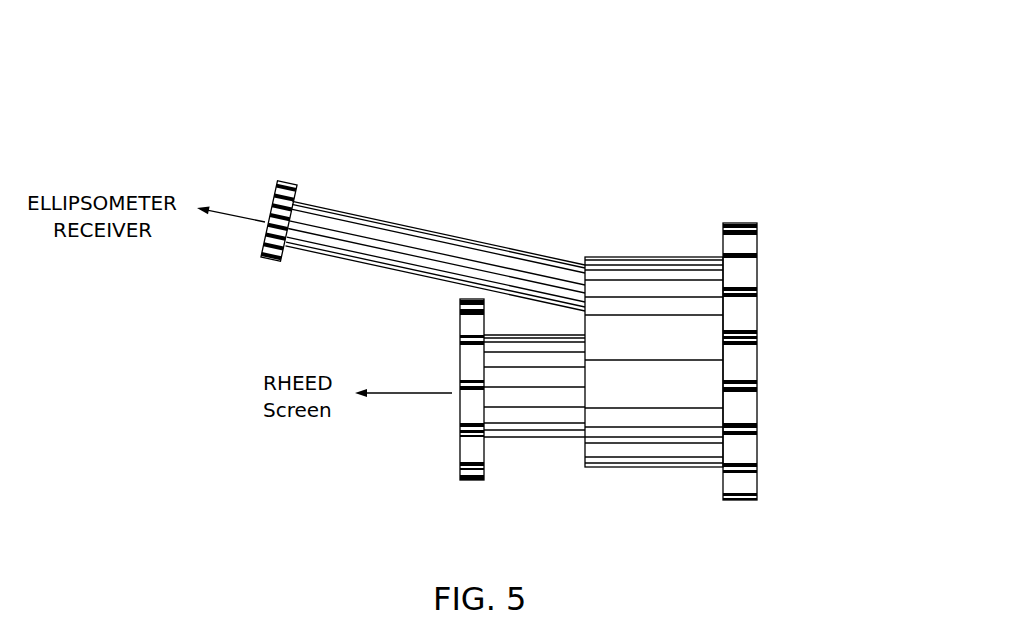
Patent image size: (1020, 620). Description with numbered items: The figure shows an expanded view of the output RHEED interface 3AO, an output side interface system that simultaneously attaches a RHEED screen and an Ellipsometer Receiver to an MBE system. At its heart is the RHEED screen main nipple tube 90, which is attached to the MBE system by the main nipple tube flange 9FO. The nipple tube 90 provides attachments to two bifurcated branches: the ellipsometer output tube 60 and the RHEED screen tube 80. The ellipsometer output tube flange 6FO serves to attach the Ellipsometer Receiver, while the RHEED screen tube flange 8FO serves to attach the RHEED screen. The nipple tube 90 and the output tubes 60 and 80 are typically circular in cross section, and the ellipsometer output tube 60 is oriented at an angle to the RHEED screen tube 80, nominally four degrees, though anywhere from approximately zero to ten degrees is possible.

The output RHEED interface 3AO is at (775, 107).
The ellipsometer output tube flange 6FO is at (285, 175).
The ellipsometer output tube 60 is at (435, 215).
The RHEED screen tube flange 8FO is at (463, 490).
The RHEED screen tube 80 is at (503, 447).
The RHEED screen main nipple tube 90 is at (655, 473).
The main nipple tube flange 9FO is at (738, 212).